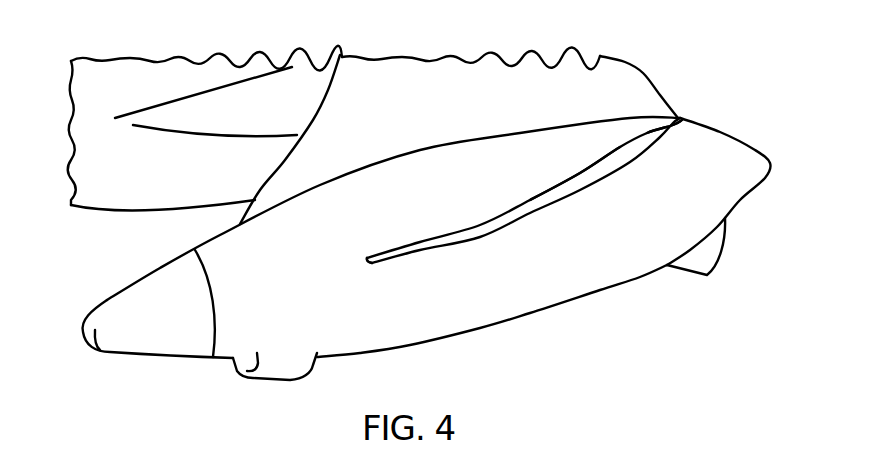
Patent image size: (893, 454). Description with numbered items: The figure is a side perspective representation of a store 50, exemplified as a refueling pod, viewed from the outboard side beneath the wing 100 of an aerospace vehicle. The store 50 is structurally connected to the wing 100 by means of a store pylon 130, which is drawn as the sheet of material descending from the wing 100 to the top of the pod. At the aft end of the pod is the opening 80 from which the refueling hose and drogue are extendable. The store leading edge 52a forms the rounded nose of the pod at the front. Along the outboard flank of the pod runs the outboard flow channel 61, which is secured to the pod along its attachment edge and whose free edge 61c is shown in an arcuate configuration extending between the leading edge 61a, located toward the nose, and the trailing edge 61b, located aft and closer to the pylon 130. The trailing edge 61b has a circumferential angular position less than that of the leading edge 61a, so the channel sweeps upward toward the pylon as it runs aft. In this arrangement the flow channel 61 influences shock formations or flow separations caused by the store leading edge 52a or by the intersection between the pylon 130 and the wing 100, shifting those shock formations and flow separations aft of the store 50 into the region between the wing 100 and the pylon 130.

The wing 100 is at (219, 63).
The store pylon 130 is at (477, 64).
The store 50 is at (410, 344).
The nose of envelope 52a is at (97, 346).
The outboard flow channel 61 is at (530, 230).
The leading edge 61a is at (367, 266).
The trailing edge 61b is at (683, 121).
The slot edge 61c is at (560, 208).
The opening 80 is at (726, 245).